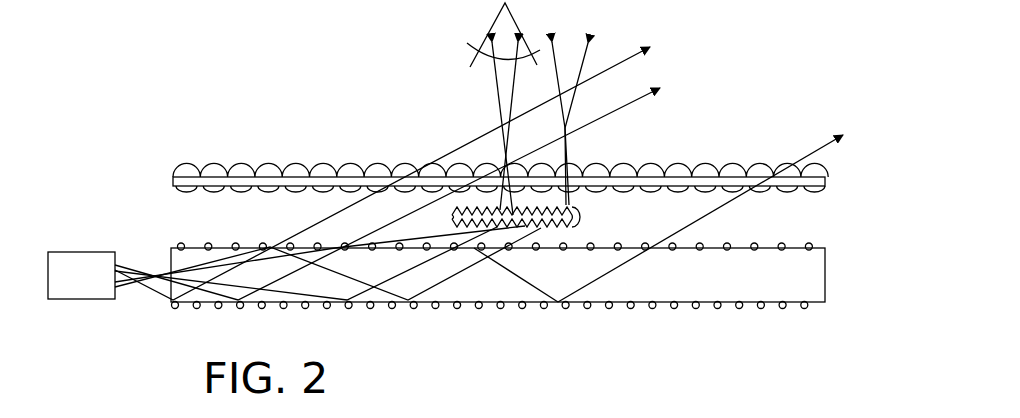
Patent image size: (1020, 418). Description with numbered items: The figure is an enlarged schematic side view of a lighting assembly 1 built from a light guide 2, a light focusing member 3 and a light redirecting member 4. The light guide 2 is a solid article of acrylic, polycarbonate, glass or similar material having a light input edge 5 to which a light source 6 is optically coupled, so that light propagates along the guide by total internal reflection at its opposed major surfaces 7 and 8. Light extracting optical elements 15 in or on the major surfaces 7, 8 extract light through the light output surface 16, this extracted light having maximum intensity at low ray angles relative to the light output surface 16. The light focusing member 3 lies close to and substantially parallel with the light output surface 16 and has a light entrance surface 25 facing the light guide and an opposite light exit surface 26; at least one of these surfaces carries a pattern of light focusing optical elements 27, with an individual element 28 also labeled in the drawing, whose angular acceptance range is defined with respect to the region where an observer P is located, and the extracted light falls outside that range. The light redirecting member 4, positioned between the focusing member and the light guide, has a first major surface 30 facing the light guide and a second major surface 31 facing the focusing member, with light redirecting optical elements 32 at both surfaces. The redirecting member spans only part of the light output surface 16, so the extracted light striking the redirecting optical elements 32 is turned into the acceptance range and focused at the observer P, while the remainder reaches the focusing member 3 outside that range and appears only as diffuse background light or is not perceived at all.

The lighting assembly 1 is at (124, 151).
The light guide 2 is at (658, 318).
The light focusing member 3 is at (504, 165).
The light redirecting member 4 is at (543, 229).
The light input edge 5 is at (170, 258).
The light source 6 is at (96, 314).
The major surface 7 is at (712, 247).
The major surface 8 is at (736, 307).
The light extracting optical elements 15 is at (563, 303).
The light output surface 16 is at (770, 247).
The light entrance surface 25 is at (334, 190).
The light exit surface 26 is at (348, 167).
The light focusing optical elements 27 is at (730, 168).
The lens element 28 is at (757, 170).
The first major surface 30 is at (466, 228).
The second major surface 31 is at (468, 207).
The light redirecting optical elements 32 is at (512, 228).
The observer P is at (512, 22).